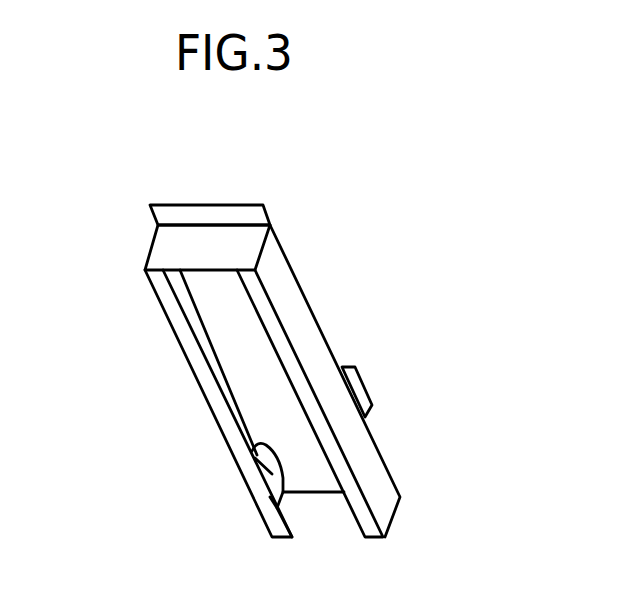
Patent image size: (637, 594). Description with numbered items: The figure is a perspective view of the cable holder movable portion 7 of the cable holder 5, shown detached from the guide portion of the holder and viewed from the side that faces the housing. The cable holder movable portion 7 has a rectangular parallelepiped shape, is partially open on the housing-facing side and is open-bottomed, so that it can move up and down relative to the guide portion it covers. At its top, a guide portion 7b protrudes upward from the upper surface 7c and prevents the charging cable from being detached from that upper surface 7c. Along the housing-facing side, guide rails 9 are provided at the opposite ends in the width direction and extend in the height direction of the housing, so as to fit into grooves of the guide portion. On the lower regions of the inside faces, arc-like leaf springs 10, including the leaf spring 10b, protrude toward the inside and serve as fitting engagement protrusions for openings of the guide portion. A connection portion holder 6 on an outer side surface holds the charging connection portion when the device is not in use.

The cable holder 5 is at (261, 321).
The cable holder movable portion 7 is at (328, 159).
The guide portion 7b is at (205, 218).
The upper surface 7c is at (190, 252).
The guide rails 9 is at (207, 377).
The connection portion holder 6 is at (353, 390).
The leaf springs 10 is at (233, 468).
The leaf spring 10b is at (270, 465).